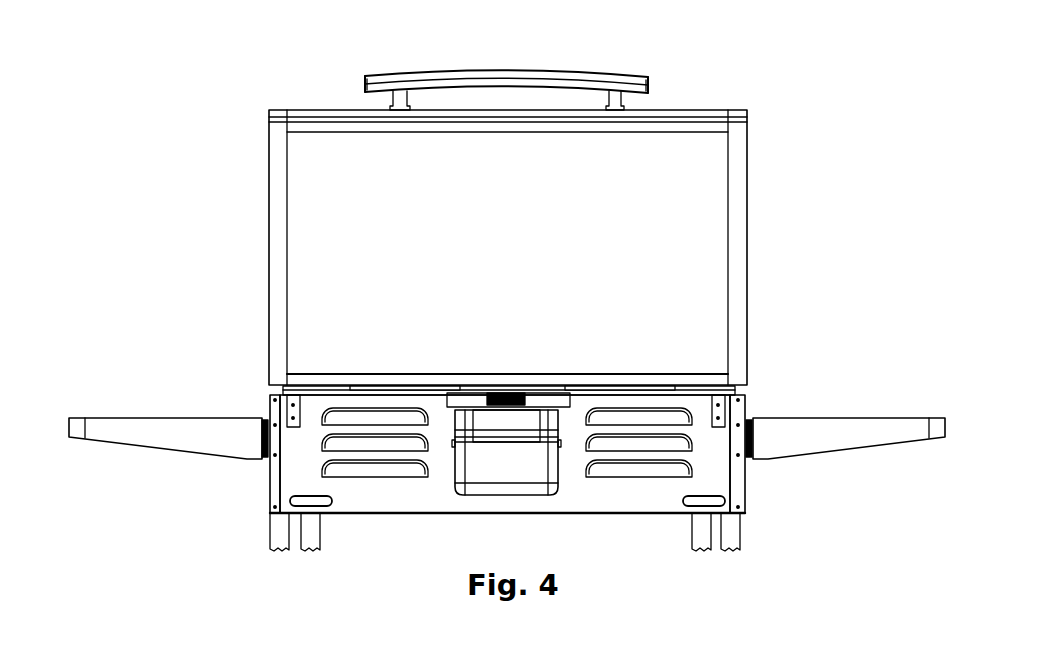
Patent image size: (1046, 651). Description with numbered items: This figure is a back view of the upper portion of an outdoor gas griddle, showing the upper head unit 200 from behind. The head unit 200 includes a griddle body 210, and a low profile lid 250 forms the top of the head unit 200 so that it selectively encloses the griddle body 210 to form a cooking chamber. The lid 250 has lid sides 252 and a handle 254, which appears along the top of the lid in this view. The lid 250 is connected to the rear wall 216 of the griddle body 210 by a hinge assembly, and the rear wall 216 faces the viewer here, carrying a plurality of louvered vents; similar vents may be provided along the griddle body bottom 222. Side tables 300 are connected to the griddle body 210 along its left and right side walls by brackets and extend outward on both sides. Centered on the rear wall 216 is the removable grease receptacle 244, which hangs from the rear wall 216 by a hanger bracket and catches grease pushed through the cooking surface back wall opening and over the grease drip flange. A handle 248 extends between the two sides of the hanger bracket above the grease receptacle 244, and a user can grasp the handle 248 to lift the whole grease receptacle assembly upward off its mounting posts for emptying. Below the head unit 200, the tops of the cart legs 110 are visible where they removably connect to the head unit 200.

The cart legs 110 is at (735, 537).
The upper head unit 200 is at (516, 453).
The griddle body 210 is at (300, 452).
The rear wall 216 is at (305, 475).
The griddle body bottom 222 is at (640, 515).
The grease receptacle 244 is at (494, 465).
The handle 248 is at (532, 397).
The low profile lid 250 is at (507, 253).
The lid sides 252 is at (268, 220).
The handle 254 is at (570, 75).
The side tables 300 is at (148, 418).